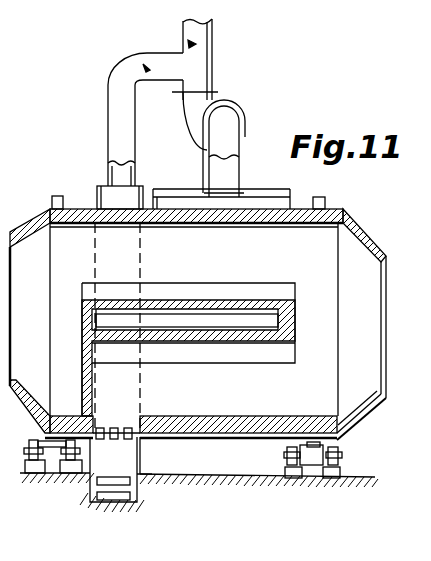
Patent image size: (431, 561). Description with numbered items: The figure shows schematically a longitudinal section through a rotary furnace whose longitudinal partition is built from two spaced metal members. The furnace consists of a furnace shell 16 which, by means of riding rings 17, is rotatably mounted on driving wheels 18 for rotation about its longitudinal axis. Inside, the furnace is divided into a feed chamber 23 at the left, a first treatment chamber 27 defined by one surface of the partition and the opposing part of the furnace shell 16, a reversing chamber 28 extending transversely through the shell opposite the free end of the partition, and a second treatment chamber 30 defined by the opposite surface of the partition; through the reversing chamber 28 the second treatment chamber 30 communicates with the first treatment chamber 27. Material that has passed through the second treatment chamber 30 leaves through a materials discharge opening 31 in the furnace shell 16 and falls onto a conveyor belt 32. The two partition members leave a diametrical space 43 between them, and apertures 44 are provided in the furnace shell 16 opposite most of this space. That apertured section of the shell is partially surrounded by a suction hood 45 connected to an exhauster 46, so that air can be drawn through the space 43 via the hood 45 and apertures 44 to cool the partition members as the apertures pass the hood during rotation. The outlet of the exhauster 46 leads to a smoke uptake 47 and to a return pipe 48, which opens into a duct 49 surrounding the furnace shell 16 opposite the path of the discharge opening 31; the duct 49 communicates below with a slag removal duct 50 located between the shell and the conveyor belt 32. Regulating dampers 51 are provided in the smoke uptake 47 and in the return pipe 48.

The furnace shell 16 is at (302, 209).
The riding rings 17 is at (57, 194).
The driving wheels 18 is at (53, 453).
The feed chamber 23 is at (38, 326).
The first treatment chamber 27 is at (223, 265).
The reversing chamber 28 is at (326, 336).
The second treatment chamber 30 is at (217, 400).
The materials discharge opening 31 is at (145, 438).
The conveyor belt 32 is at (120, 472).
The diametrical space 43 is at (203, 331).
The apertures 44 is at (257, 323).
The suction hood 45 is at (248, 203).
The exhauster 46 is at (247, 113).
The smoke uptake 47 is at (212, 45).
The return pipe 48 is at (122, 105).
The duct 49 is at (110, 197).
The slag removal duct 50 is at (143, 463).
The regulating dampers 51 is at (193, 44).